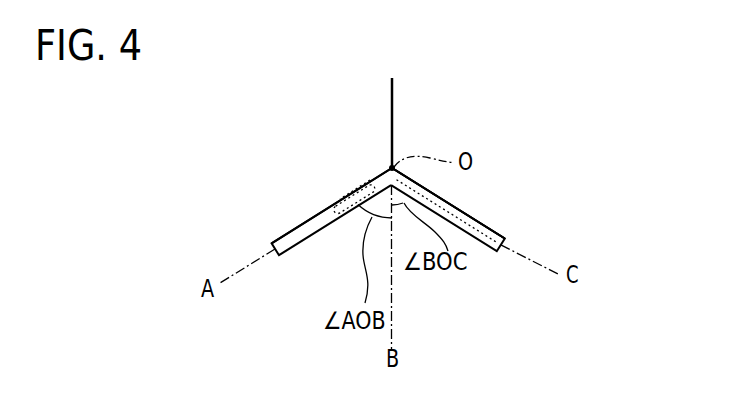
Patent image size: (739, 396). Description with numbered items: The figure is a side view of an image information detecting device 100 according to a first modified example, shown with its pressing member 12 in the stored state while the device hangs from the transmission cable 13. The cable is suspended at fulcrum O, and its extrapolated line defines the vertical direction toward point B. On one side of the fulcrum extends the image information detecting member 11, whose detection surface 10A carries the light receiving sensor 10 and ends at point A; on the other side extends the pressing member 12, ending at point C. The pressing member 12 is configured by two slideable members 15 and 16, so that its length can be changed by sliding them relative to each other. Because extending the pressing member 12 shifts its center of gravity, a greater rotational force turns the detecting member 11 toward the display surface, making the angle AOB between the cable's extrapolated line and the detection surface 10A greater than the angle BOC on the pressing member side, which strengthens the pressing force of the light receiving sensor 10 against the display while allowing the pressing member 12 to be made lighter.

The image information detecting device 100 is at (512, 184).
The light receiving sensor 10 is at (352, 208).
The detection surface 10A is at (349, 189).
The image information detecting member 11 is at (300, 242).
The pressing member 12 is at (567, 182).
The transmission cable 13 is at (392, 100).
The slideable member 15 is at (462, 211).
The slideable member 16 is at (474, 227).